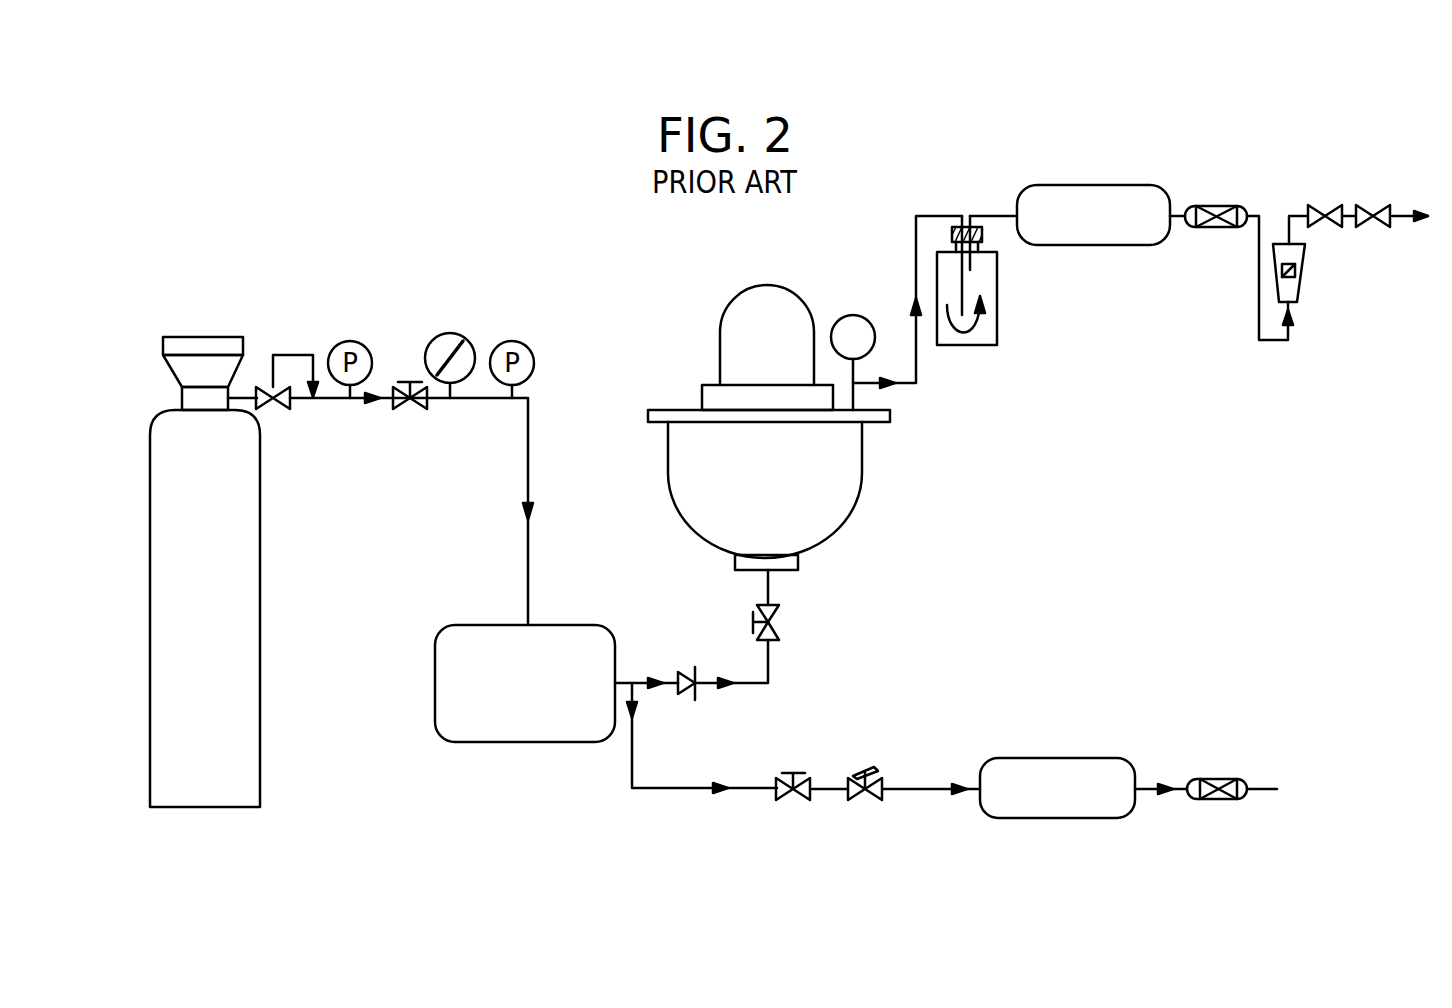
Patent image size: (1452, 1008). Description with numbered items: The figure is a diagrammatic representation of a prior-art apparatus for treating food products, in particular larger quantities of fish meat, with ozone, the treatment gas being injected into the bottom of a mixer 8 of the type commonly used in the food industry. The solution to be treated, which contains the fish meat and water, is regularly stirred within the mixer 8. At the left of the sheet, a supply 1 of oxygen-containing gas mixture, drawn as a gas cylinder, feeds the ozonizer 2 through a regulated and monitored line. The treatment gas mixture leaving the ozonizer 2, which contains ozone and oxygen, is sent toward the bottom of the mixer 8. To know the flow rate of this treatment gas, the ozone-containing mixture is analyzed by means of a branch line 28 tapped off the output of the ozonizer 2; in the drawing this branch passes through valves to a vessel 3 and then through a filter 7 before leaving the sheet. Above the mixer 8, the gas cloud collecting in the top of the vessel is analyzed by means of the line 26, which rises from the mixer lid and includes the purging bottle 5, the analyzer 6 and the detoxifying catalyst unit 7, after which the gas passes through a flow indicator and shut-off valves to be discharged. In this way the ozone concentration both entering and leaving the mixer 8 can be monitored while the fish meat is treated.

The supply 1 is at (260, 625).
The ozonizer 2 is at (540, 625).
The purge gas tank 3 is at (1058, 818).
The purging bottle 5 is at (962, 345).
The analyzer 6 is at (1090, 245).
The detoxifying catalyst unit 7 is at (1200, 799).
The mixer 8 is at (862, 473).
The line 26 is at (916, 355).
The branch line 28 is at (652, 790).